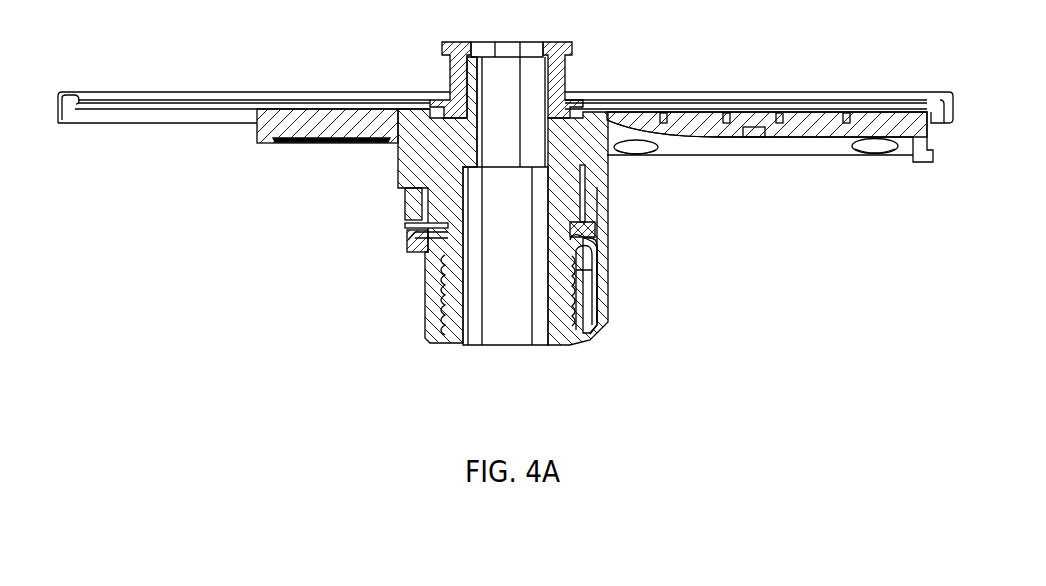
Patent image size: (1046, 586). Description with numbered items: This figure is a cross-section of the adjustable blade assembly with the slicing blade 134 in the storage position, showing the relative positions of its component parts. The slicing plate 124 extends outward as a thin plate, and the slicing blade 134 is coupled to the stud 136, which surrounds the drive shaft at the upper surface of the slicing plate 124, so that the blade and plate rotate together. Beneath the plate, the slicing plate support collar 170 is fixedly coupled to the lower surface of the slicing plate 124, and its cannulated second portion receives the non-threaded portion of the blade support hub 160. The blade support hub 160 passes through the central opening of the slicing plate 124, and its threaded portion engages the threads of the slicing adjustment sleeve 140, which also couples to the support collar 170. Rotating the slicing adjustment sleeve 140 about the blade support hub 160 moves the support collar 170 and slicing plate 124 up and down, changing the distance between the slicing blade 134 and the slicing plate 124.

The slicing plate 124 is at (243, 97).
The slicing blade 134 is at (817, 130).
The stud 136 is at (560, 75).
The slicing adjustment sleeve 140 is at (604, 300).
The blade support hub 160 is at (497, 313).
The slicing plate support collar 170 is at (337, 122).